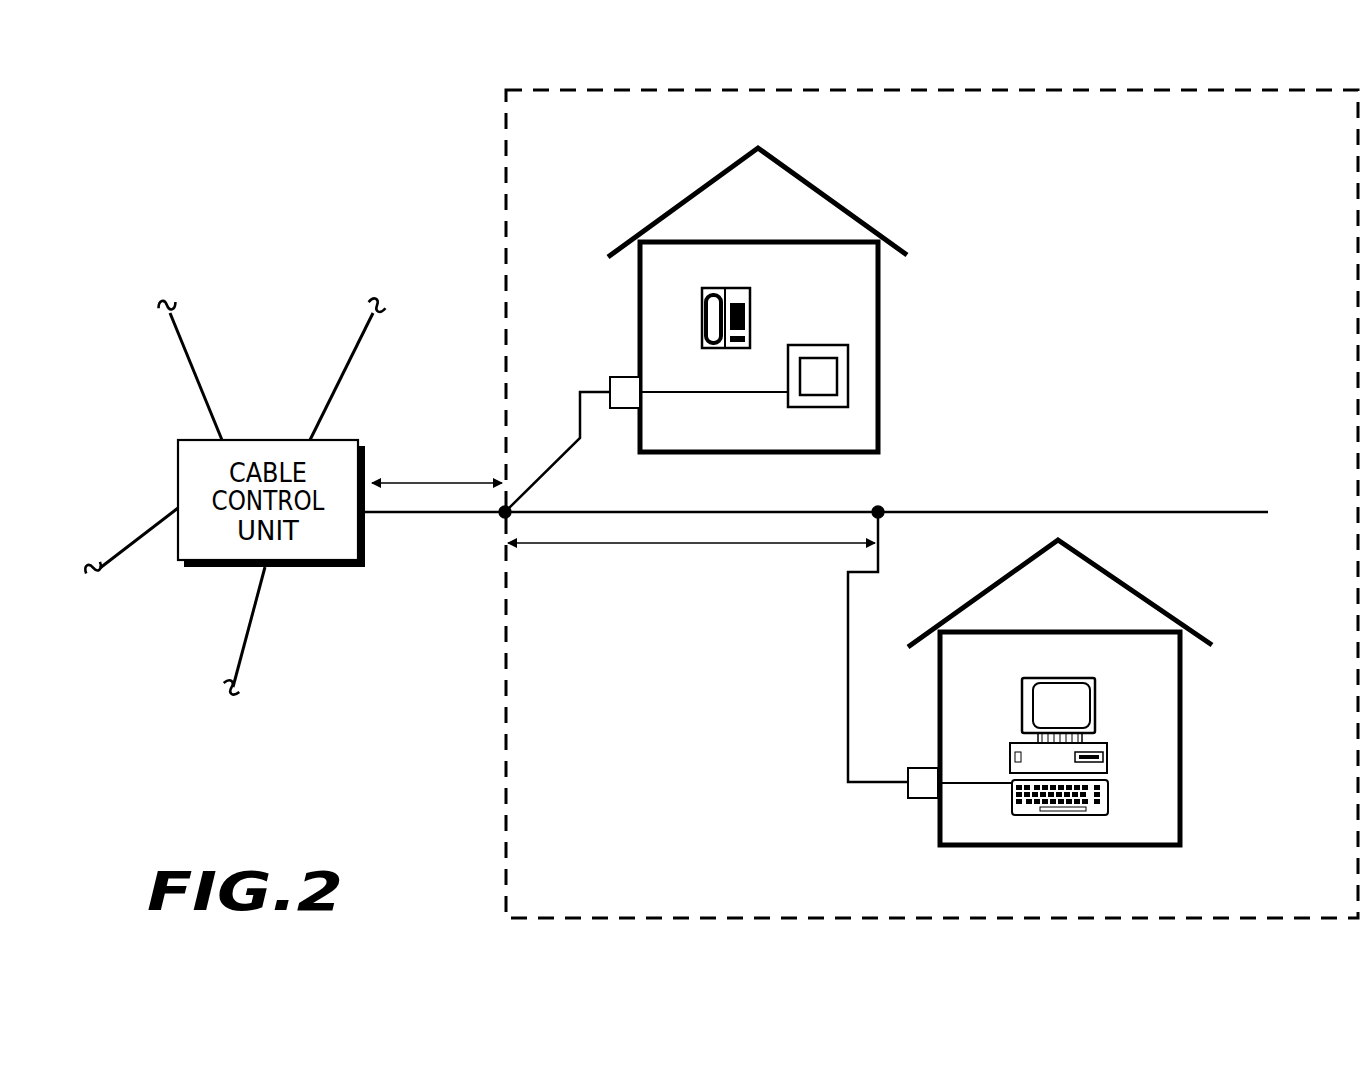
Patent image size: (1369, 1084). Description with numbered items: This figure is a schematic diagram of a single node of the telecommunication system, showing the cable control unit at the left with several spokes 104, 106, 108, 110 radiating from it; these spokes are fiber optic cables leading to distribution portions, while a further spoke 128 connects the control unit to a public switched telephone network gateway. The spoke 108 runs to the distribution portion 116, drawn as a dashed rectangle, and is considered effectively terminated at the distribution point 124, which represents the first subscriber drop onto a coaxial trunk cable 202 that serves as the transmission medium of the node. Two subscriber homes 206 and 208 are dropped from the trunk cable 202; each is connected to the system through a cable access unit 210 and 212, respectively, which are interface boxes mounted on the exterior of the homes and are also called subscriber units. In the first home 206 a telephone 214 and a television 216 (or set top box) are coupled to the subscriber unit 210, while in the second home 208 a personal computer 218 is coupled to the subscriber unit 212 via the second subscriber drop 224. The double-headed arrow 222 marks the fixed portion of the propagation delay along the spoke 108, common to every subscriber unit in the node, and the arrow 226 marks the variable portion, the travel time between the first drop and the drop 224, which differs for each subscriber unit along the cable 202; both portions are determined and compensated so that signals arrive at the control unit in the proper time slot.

The spoke 104 is at (203, 388).
The spoke 106 is at (350, 368).
The spoke 108 is at (410, 515).
The spoke 110 is at (253, 600).
The distribution portion 116 is at (505, 172).
The distribution point 124 is at (495, 518).
The spoke 128 is at (133, 538).
The coaxial trunk cable 202 is at (1000, 510).
The subscriber home 206 is at (878, 287).
The subscriber home 208 is at (1182, 705).
The cable access unit 210 is at (630, 377).
The cable access unit 212 is at (917, 800).
The telephone 214 is at (750, 340).
The television 216 is at (847, 347).
The personal computer 218 is at (1093, 680).
The fixed portion of propagation delay 222 is at (433, 482).
The subscriber drop 224 is at (848, 615).
The variable portion of propagation delay 226 is at (663, 543).